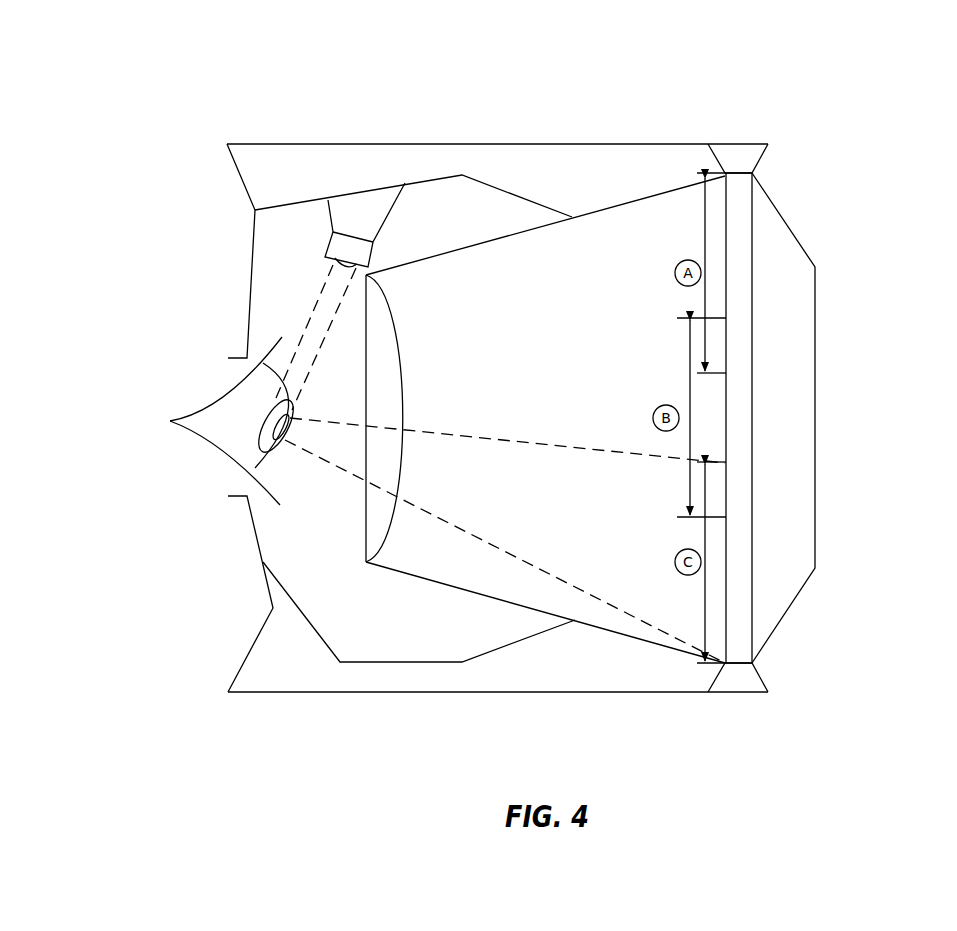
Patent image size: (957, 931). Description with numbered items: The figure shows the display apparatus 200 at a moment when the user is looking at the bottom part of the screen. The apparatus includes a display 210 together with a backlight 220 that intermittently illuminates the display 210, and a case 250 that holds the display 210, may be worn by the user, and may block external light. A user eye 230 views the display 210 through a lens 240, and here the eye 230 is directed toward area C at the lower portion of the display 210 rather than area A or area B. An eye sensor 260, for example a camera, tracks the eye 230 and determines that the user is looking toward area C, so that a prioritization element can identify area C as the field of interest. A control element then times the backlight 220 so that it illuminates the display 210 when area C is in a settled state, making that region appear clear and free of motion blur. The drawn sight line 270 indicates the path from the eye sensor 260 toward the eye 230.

The display apparatus 200 is at (96, 125).
The display 210 is at (738, 272).
The backlight 220 is at (815, 382).
The user eye 230 is at (193, 388).
The lens 240 is at (358, 489).
The case 250 is at (672, 692).
The eye sensor 260 is at (345, 248).
The illumination light beam 270 is at (308, 333).